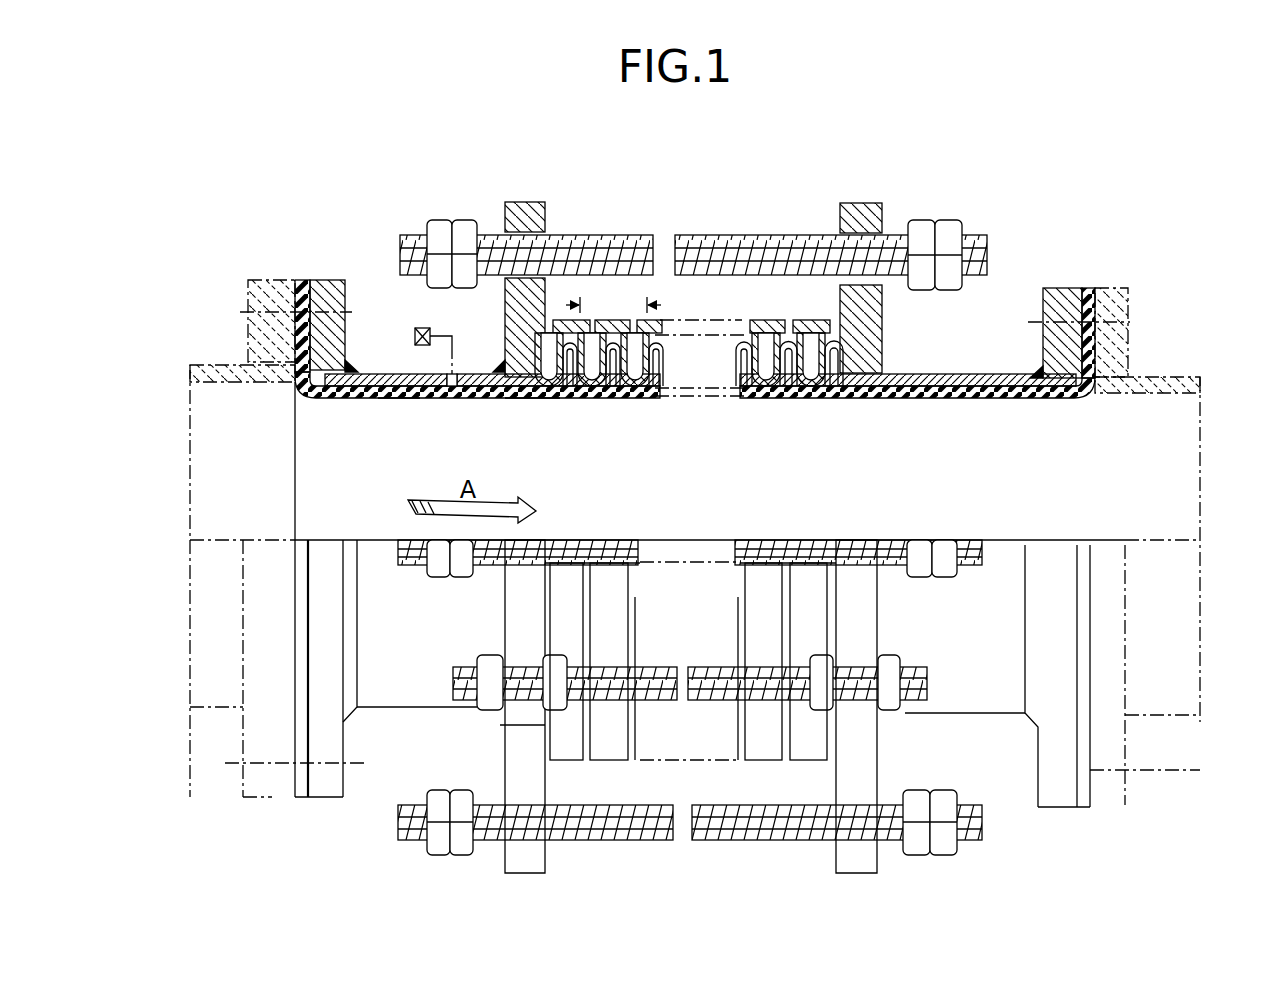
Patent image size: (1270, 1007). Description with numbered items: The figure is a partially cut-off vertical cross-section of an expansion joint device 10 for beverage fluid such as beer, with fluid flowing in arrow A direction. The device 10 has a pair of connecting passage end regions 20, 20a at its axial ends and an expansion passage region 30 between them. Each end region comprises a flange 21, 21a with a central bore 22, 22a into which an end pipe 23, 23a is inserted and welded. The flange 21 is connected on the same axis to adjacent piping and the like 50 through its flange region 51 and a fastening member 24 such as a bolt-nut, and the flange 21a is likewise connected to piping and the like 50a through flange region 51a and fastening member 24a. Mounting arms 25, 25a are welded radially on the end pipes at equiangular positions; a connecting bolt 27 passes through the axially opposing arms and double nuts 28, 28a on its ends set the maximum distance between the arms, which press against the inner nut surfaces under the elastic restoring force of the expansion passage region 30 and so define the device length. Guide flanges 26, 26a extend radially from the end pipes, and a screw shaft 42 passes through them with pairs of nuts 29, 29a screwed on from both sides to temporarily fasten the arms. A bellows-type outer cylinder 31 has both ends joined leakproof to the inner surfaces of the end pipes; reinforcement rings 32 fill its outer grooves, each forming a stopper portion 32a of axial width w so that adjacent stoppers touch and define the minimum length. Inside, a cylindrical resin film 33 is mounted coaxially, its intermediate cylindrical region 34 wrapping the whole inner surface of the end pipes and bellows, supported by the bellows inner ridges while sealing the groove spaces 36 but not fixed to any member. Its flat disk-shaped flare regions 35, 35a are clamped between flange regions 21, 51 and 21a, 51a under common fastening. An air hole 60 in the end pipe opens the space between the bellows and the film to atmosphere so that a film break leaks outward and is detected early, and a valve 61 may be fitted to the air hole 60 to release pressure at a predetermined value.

The expansion joint device 10 is at (1182, 408).
The connecting passage end region 20 is at (1052, 264).
The connecting passage end region 20a is at (401, 206).
The flange 21 is at (1062, 298).
The flange 21a is at (327, 288).
The bore 22 is at (1092, 378).
The bore 22a is at (322, 371).
The end pipe 23 is at (970, 375).
The end pipe 23a is at (410, 373).
The fastening member 24 is at (1036, 325).
The fastening member 24a is at (350, 318).
The mounting arm 25 is at (868, 212).
The mounting arm 25a is at (528, 205).
The guide flange 26 is at (861, 556).
The guide flange 26a is at (530, 551).
The connecting bolt 27 is at (750, 822).
The double nuts 28 is at (941, 226).
The double nuts 28a is at (462, 222).
The nuts 29 is at (823, 686).
The nuts 29a is at (552, 680).
The expansion passage region 30 is at (694, 308).
The bellows-type outer cylinder 31 is at (633, 342).
The reinforcement ring 32 is at (807, 345).
The stopper portion 32a is at (760, 340).
The cylindrical resin film 33 is at (397, 399).
The intermediate cylindrical region 34 is at (528, 399).
The flare region 35 is at (1088, 298).
The flare region 35a is at (301, 290).
The space 36 is at (549, 356).
The screw shaft 42 is at (706, 682).
The piping and the like 50 is at (1168, 378).
The piping and the like 50a is at (210, 365).
The flange region 51 is at (1128, 292).
The flange region 51a is at (248, 287).
The air hole 60 is at (455, 372).
The valve 61 is at (422, 328).